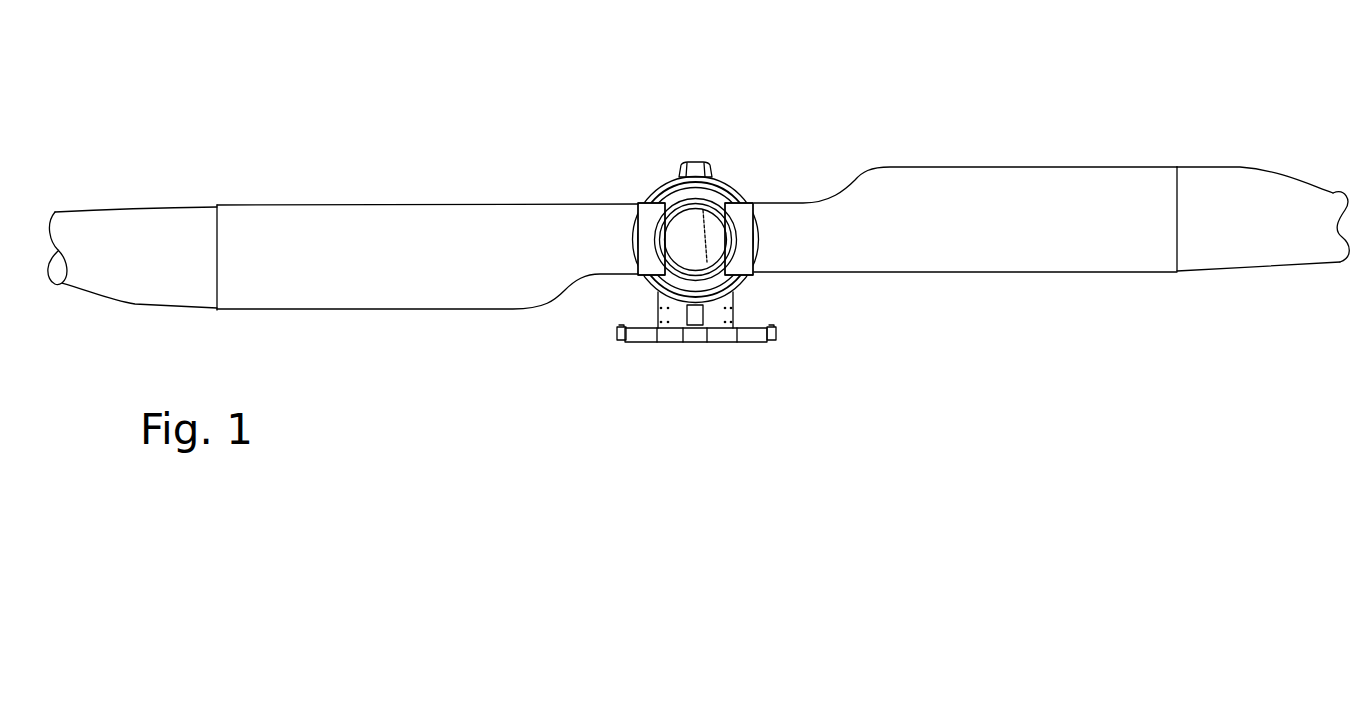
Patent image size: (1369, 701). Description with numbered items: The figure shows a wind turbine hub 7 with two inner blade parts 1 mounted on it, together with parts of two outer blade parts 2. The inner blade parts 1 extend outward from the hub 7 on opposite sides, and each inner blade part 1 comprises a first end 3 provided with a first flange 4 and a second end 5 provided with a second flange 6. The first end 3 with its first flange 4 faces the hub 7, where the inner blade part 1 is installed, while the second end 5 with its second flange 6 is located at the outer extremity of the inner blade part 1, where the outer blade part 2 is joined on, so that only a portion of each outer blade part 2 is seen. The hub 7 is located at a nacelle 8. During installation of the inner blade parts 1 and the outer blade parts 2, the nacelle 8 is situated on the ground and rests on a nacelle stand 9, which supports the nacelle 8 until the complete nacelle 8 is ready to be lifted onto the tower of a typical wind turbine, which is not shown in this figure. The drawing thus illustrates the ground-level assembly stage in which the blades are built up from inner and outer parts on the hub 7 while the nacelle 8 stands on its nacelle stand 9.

The inner blade part 1 is at (423, 227).
The outer blade part 2 is at (164, 222).
The first end 3 is at (627, 212).
The first flange 4 is at (762, 213).
The second end 5 is at (224, 213).
The second flange 6 is at (1170, 173).
The wind turbine hub 7 is at (705, 242).
The nacelle 8 is at (700, 172).
The nacelle stand 9 is at (695, 333).